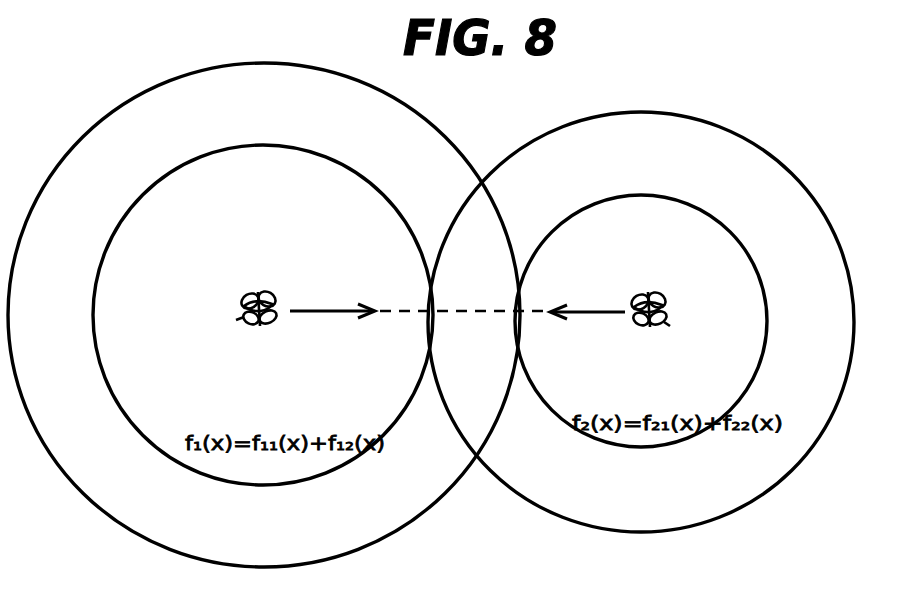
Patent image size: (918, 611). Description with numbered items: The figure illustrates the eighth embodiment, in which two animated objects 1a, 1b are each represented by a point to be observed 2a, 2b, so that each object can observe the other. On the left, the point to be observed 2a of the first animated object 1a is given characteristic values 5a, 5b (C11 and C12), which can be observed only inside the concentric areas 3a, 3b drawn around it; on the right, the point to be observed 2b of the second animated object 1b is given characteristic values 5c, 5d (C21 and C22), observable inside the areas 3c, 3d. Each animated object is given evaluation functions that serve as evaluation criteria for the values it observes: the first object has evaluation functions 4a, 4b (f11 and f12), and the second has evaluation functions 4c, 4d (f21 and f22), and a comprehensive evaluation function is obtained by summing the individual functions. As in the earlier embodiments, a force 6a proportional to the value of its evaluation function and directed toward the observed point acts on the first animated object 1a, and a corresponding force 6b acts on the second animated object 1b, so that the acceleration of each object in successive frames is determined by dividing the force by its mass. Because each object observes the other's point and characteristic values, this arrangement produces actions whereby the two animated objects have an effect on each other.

The animated object 1a is at (245, 306).
The animated object 1b is at (665, 306).
The point to be observed 2a is at (244, 318).
The point to be observed 2b is at (667, 326).
The area 3a is at (130, 203).
The area 3b is at (147, 117).
The area 3c is at (678, 232).
The area 3d is at (753, 163).
The evaluation function 4a is at (205, 355).
The evaluation function 4b is at (205, 392).
The evaluation function 4c is at (572, 360).
The evaluation function 4d is at (580, 393).
The characteristic value 5a is at (300, 233).
The characteristic value 5b is at (352, 233).
The characteristic value 5c is at (690, 257).
The characteristic value 5d is at (742, 258).
The force 6a is at (310, 310).
The force 6b is at (591, 311).